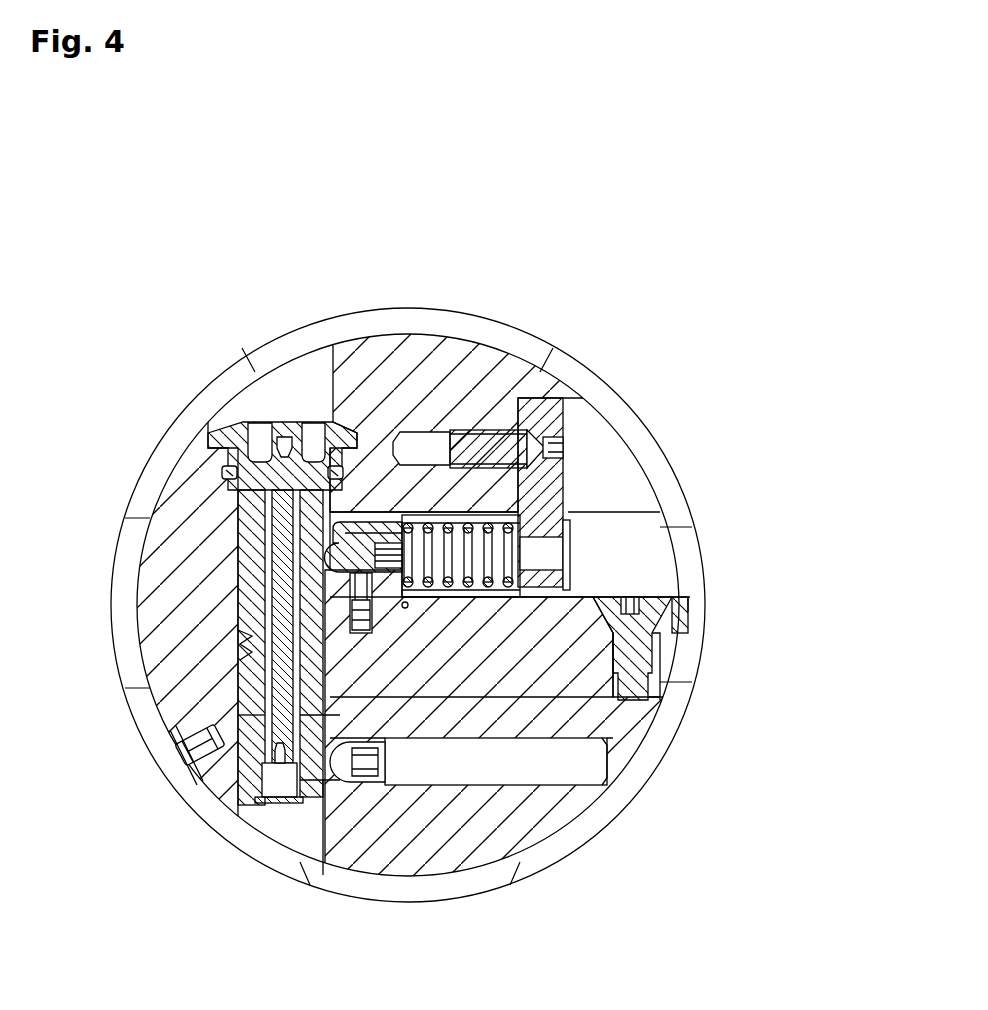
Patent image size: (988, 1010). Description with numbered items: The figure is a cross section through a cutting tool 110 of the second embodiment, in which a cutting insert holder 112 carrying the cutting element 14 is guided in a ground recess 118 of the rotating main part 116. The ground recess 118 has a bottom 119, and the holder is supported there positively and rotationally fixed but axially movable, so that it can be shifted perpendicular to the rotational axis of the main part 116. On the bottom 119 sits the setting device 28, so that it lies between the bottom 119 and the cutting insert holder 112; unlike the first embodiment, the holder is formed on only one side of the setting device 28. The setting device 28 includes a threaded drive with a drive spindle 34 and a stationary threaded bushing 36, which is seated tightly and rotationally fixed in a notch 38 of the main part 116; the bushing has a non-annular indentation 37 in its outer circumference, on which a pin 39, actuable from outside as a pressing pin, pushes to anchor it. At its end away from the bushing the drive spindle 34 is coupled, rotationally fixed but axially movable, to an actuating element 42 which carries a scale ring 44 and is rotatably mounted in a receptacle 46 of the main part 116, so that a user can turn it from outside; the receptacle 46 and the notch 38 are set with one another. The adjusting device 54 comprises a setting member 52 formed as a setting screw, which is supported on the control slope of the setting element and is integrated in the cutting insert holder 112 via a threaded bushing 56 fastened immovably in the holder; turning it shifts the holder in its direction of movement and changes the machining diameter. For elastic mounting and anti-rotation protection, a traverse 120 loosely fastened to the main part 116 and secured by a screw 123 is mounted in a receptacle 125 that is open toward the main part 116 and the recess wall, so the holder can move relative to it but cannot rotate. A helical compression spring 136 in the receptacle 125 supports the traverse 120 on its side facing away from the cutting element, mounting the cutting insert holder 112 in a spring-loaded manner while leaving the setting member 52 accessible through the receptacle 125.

The cutting tool 110 is at (655, 238).
The cutting insert holder 112 is at (585, 847).
The cutting element 14 is at (663, 620).
The setting device 28 is at (224, 546).
The drive spindle 34 is at (283, 594).
The threaded bushing 36 is at (247, 782).
The indentation 37 is at (320, 752).
The notch 38 is at (300, 806).
The pin 39 is at (350, 778).
The actuating element 42 is at (230, 421).
The scale ring 44 is at (243, 461).
The receptacle 46 is at (342, 430).
The setting member 52 is at (380, 511).
The adjusting device 54 is at (353, 553).
The threaded bushing 56 is at (462, 680).
The main part 116 is at (508, 828).
The ground recess 118 is at (598, 686).
The bottom 119 is at (248, 648).
The traverse 120 is at (538, 415).
The screw 123 is at (530, 450).
The receptacle 125 is at (553, 550).
The compression spring 136 is at (475, 515).